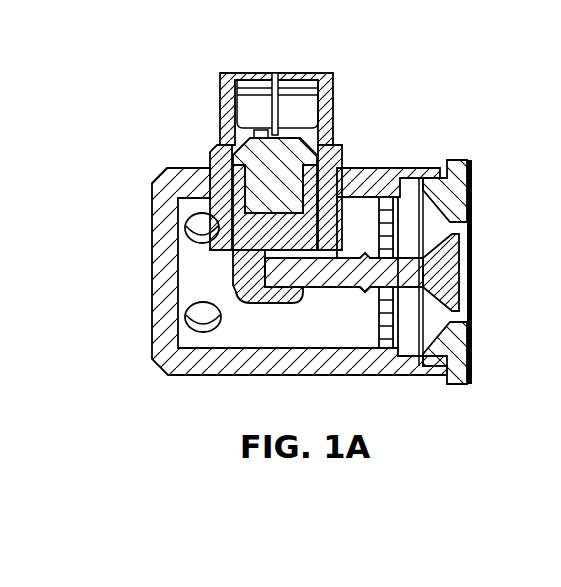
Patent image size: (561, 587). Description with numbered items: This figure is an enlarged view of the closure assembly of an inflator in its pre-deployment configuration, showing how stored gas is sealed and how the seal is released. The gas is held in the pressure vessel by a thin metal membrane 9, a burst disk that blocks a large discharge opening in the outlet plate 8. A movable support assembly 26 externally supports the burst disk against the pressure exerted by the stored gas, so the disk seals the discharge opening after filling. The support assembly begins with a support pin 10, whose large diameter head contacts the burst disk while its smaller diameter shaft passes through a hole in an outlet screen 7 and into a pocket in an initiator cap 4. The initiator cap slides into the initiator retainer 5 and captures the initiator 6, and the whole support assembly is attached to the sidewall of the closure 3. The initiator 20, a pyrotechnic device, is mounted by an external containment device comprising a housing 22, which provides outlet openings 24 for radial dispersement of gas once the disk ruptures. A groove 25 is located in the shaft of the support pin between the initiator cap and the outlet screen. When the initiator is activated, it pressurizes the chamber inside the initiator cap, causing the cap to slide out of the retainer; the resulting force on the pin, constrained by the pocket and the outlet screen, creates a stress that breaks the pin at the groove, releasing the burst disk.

The closure 3 is at (164, 233).
The initiator cap 4 is at (233, 248).
The initiator retainer 5 is at (232, 130).
The initiator 6 is at (287, 157).
The outlet screen 7 is at (388, 222).
The outlet plate 8 is at (447, 183).
The thin metal membrane 9 is at (473, 234).
The support pin 10 is at (437, 277).
The initiator 20 is at (218, 140).
The housing 22 is at (367, 186).
The outlet openings 24 is at (187, 238).
The groove 25 is at (363, 288).
The movable support assembly 26 is at (238, 281).